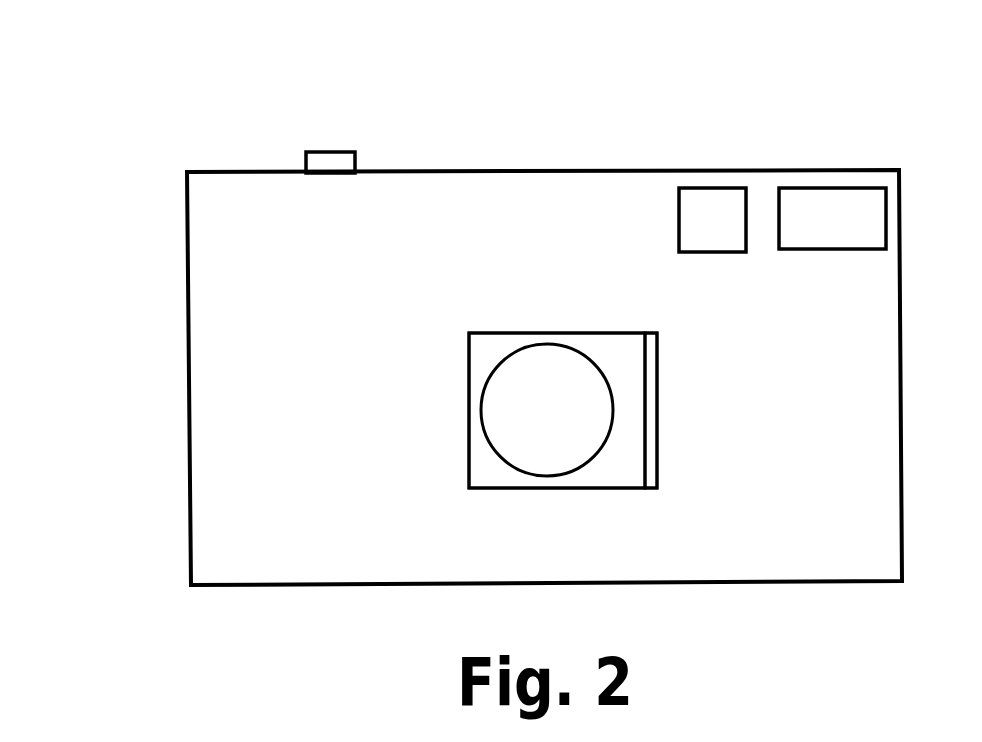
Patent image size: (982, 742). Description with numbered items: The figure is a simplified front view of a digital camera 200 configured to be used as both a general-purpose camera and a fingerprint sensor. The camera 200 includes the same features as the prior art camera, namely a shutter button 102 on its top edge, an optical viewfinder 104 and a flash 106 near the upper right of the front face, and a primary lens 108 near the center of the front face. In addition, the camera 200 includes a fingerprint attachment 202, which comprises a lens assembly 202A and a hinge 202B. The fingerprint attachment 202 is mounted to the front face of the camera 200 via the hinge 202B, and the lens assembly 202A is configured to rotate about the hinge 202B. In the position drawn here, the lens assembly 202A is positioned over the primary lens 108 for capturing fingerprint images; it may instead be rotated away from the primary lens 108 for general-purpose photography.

The digital camera 200 is at (246, 86).
The shutter button 102 is at (331, 152).
The optical viewfinder 104 is at (711, 188).
The flash 106 is at (831, 188).
The fingerprint attachment 202 is at (513, 322).
The lens assembly 202A is at (595, 332).
The hinge 202B is at (652, 407).
The primary lens 108 is at (500, 365).